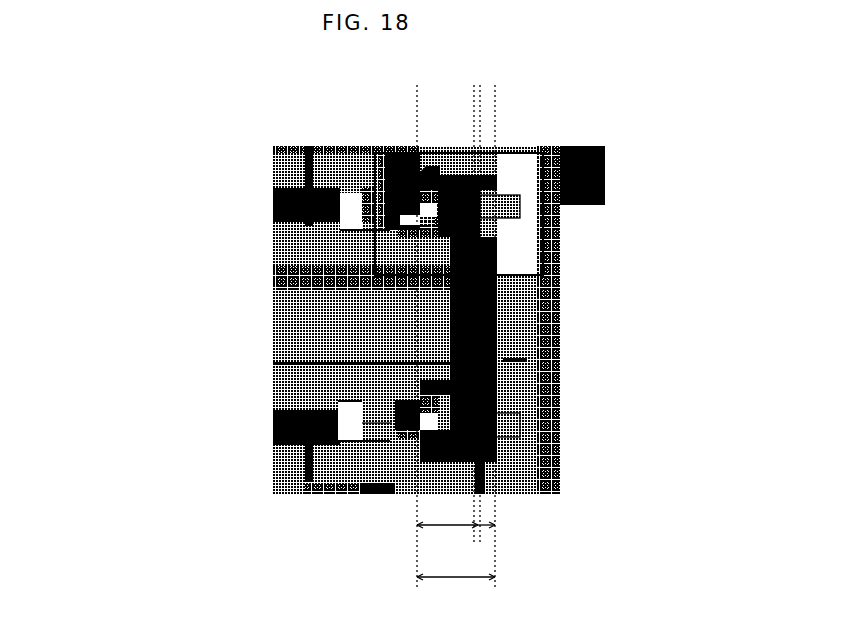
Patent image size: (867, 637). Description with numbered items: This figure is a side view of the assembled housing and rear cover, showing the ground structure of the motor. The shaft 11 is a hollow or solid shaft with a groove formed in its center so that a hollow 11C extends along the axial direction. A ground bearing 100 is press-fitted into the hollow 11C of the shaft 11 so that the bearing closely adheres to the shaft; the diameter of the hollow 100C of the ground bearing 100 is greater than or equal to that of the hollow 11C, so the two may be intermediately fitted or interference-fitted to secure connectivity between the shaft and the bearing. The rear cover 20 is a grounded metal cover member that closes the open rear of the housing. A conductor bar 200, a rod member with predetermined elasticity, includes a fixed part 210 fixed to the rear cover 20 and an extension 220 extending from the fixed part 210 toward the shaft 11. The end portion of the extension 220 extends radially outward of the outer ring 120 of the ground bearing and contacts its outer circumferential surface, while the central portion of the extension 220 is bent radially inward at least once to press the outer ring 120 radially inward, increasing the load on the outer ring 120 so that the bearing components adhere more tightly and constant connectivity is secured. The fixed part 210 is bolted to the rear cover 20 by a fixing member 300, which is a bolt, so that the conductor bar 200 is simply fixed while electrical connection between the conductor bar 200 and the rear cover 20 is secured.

The shaft 11 is at (290, 248).
The hollow of the shaft 11C is at (330, 292).
The outer ring of the ground bearing 120 is at (372, 192).
The ground bearing 100 is at (403, 445).
The hollow of the ground bearing 100C is at (415, 305).
The rear cover 20 is at (527, 168).
The fixing member 300 is at (563, 223).
The conductor bar 200 is at (456, 589).
The fixed part 210 is at (489, 540).
The extension 220 is at (447, 540).